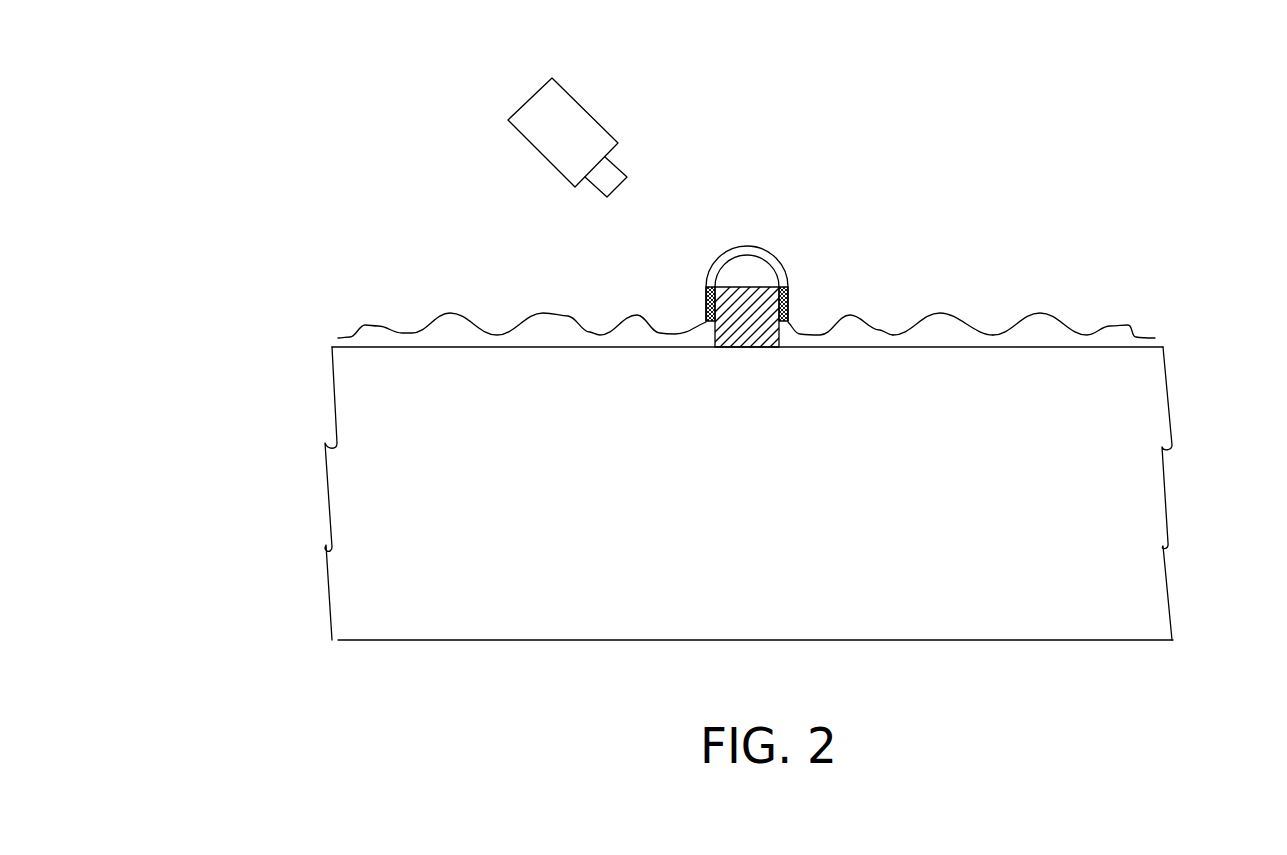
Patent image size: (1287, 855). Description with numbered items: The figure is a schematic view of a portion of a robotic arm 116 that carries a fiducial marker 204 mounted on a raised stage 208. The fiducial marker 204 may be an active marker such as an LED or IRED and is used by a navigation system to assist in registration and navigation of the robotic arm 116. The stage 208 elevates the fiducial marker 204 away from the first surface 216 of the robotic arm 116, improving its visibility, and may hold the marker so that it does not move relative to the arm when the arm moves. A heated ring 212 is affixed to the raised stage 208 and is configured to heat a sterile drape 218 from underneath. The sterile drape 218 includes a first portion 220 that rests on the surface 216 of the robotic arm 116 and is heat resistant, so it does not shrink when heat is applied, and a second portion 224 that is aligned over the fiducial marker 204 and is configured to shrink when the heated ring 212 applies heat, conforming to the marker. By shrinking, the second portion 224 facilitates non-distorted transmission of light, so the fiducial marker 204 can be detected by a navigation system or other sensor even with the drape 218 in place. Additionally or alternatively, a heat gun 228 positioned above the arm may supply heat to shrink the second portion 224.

The robotic arm 116 is at (362, 172).
The fiducial marker 204 is at (748, 267).
The raised stage 208 is at (740, 318).
The heated ring 212 is at (707, 303).
The first surface 216 is at (1073, 350).
The sterile drape 218 is at (952, 312).
The first portion 220 is at (1125, 323).
The second portion 224 is at (790, 267).
The heat gun 228 is at (578, 137).